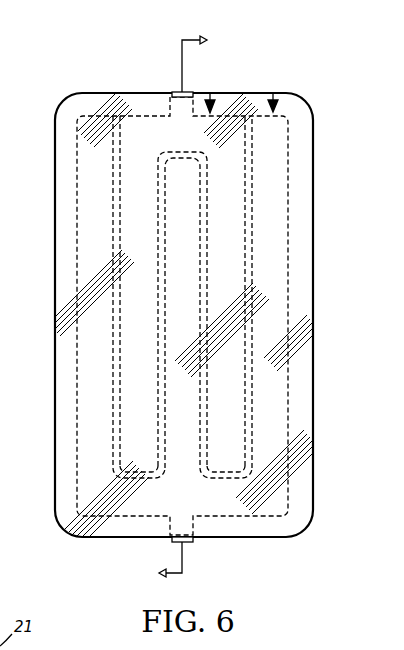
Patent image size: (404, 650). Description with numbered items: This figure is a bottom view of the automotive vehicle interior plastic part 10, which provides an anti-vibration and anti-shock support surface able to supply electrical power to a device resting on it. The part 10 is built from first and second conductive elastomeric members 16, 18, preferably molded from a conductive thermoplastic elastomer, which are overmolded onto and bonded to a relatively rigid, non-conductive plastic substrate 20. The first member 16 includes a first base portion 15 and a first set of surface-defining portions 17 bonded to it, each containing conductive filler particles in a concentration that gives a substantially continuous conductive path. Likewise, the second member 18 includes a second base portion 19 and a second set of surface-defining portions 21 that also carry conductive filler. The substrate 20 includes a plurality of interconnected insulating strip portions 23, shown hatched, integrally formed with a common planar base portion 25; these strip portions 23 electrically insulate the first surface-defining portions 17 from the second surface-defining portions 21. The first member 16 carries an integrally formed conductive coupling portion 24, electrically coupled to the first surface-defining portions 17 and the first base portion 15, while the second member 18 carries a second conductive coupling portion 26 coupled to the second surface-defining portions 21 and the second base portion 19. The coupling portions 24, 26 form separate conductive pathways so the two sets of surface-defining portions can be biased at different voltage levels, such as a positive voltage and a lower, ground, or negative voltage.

The automotive vehicle interior plastic part 10 is at (322, 158).
The first base portion 15 is at (157, 135).
The first conductive anti-vibration and anti-shock elastomeric member 16 is at (210, 95).
The first set of surface-defining portions 17 is at (228, 260).
The second conductive anti-vibration and anti-shock elastomeric member 18 is at (276, 95).
The second base portion 19 is at (203, 493).
The non-conductive plastic substrate 20 is at (322, 262).
The second set of surface-defining portions 21 is at (97, 353).
The insulating strip portions 23 is at (118, 236).
The first conductive plastic coupling portion 24 is at (181, 92).
The common planar base portion 25 is at (313, 513).
The second conductive plastic coupling portion 26 is at (190, 541).